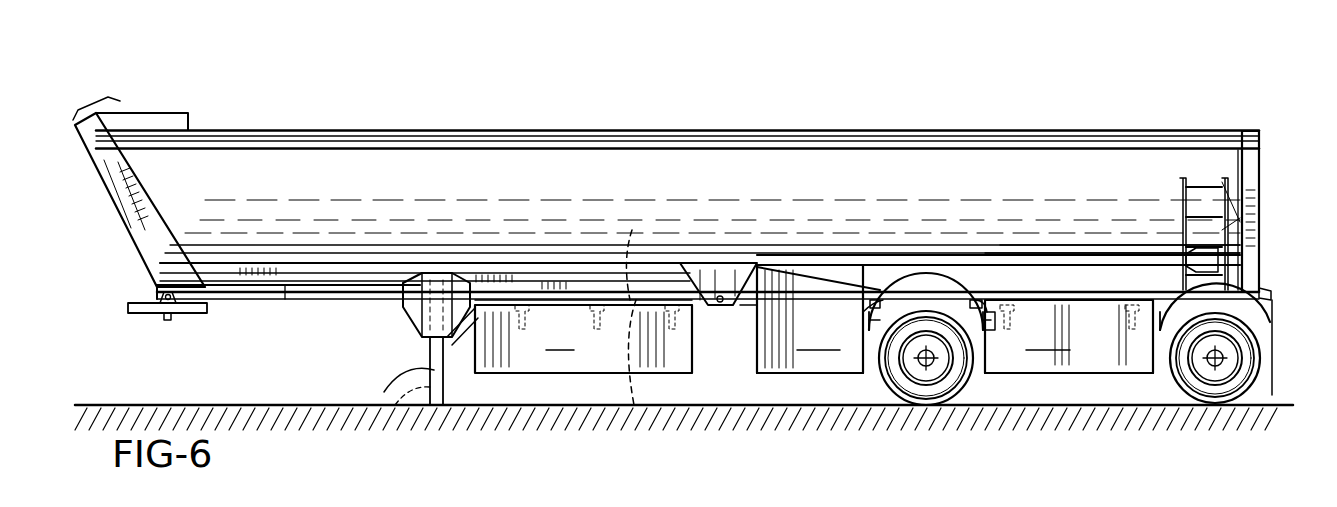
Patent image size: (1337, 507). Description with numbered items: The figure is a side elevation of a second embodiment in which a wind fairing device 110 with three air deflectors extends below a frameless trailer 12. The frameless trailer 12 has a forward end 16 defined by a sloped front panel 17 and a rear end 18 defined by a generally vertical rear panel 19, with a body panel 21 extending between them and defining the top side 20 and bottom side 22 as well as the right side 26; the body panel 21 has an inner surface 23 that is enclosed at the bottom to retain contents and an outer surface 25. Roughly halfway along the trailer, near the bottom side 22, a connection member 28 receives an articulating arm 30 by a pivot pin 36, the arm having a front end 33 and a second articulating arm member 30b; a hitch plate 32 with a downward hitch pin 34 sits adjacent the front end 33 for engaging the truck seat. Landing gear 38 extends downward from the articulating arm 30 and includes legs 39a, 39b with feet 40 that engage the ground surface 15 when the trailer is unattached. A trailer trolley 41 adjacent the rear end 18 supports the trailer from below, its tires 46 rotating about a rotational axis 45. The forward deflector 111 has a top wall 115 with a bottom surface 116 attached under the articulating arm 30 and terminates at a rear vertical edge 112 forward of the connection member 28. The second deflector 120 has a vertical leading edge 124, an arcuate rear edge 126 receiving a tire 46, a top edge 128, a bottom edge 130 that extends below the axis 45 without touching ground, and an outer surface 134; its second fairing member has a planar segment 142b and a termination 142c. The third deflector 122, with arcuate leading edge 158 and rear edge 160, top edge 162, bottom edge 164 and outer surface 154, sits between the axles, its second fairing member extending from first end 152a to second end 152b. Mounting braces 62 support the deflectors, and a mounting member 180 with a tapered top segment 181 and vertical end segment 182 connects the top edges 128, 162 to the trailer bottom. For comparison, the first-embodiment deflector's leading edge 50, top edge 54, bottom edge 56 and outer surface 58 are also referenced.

The frameless trailer 12 is at (393, 108).
The ground surface 15 is at (166, 405).
The forward end 16 is at (100, 193).
The front panel 17 is at (128, 213).
The rear end 18 is at (1275, 162).
The rear panel 19 is at (1262, 207).
The top side 20 is at (712, 117).
The body panel 21 is at (257, 185).
The bottom side 22 is at (312, 373).
The inner surface 23 is at (520, 185).
The outer surface 25 is at (598, 194).
The right side 26 is at (640, 181).
The connection member 28 is at (714, 260).
The articulating arm 30 is at (276, 305).
The second articulating arm member 30b is at (300, 304).
The hitch plate 32 is at (142, 313).
The front end of articulating arm 33 is at (178, 305).
The hitch pin 34 is at (167, 320).
The pivot pin 36 is at (720, 303).
The landing gear 38 is at (422, 355).
The first leg 39a is at (405, 408).
The second leg 39b is at (410, 387).
The foot 40 is at (425, 403).
The trailer trolley 41 is at (1272, 300).
The rotational axis 45 is at (928, 360).
The tire 46 is at (900, 386).
The leading edge 50 is at (458, 368).
The top edge 54 is at (556, 300).
The bottom edge 56 is at (548, 375).
The outer surface 58 is at (583, 339).
The mounting brace 62 is at (596, 375).
The wind fairing device 110 is at (724, 378).
The forward deflector 111 is at (507, 375).
The rear vertical edge 112 is at (690, 368).
The top wall 115 is at (632, 230).
The bottom surface 116 is at (636, 405).
The second deflector 120 is at (833, 378).
The third deflector 122 is at (1062, 375).
The leading edge 124 is at (754, 371).
The rear edge 126 is at (842, 376).
The top edge 128 is at (848, 302).
The bottom edge 130 is at (800, 378).
The outer surface 134 is at (810, 319).
The planar segment 142b is at (884, 300).
The termination of second fairing member 142c is at (904, 300).
The first end of second fairing member 152a is at (948, 310).
The second end of second fairing member 152b is at (1166, 300).
The outer surface 154 is at (1069, 336).
The leading edge 158 is at (982, 371).
The rear edge 160 is at (1156, 376).
The top edge 162 is at (1035, 300).
The bottom edge 164 is at (1082, 377).
The mounting member 180 is at (1068, 267).
The tapered top segment 181 is at (993, 280).
The vertical end segment 182 is at (807, 285).